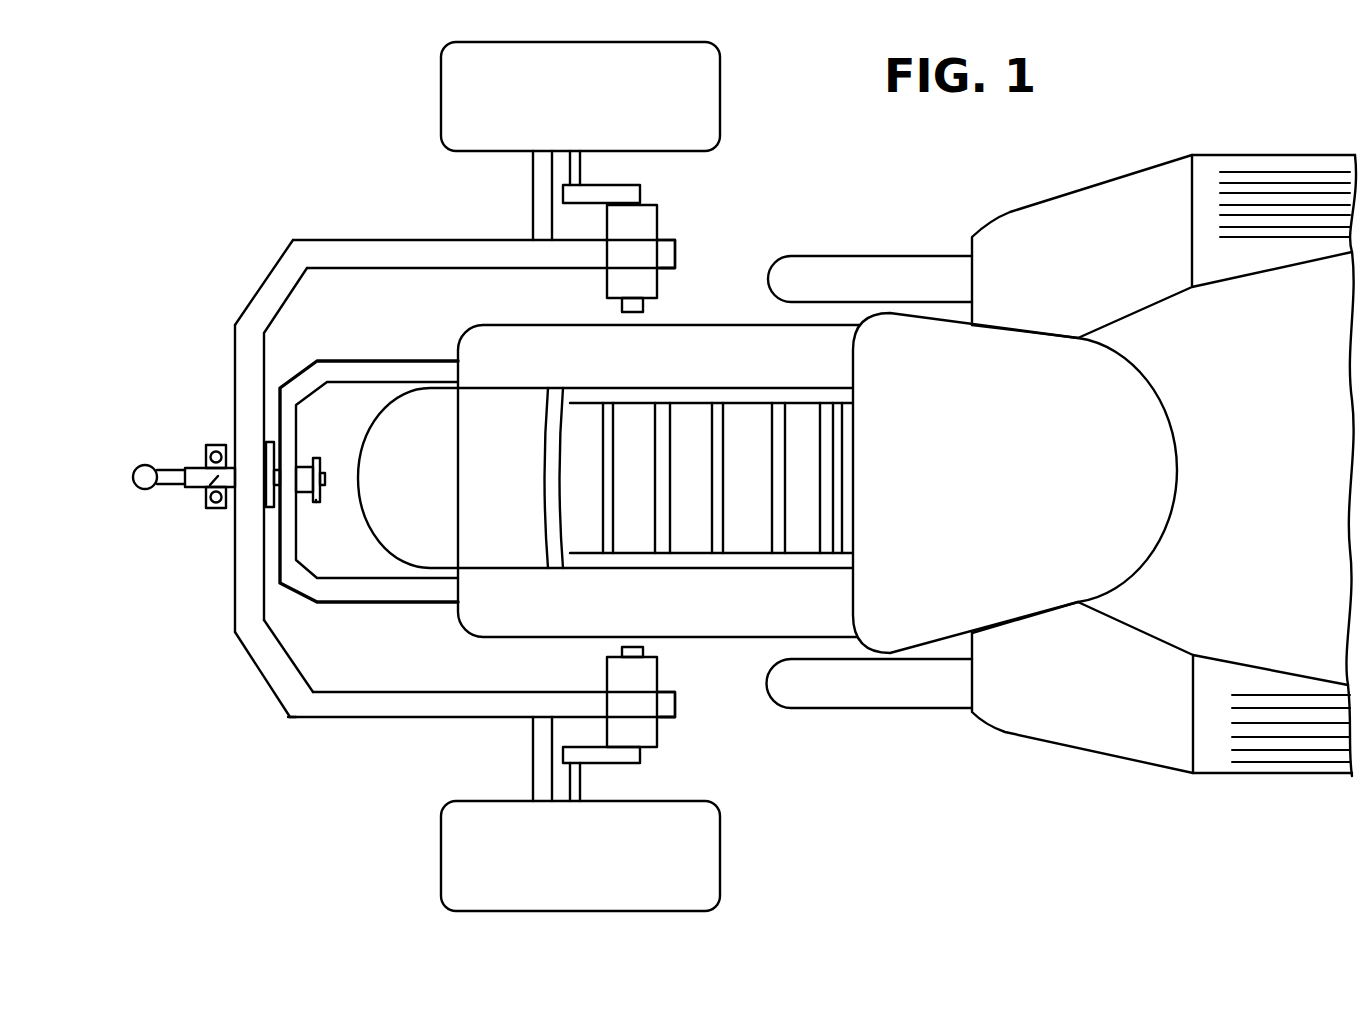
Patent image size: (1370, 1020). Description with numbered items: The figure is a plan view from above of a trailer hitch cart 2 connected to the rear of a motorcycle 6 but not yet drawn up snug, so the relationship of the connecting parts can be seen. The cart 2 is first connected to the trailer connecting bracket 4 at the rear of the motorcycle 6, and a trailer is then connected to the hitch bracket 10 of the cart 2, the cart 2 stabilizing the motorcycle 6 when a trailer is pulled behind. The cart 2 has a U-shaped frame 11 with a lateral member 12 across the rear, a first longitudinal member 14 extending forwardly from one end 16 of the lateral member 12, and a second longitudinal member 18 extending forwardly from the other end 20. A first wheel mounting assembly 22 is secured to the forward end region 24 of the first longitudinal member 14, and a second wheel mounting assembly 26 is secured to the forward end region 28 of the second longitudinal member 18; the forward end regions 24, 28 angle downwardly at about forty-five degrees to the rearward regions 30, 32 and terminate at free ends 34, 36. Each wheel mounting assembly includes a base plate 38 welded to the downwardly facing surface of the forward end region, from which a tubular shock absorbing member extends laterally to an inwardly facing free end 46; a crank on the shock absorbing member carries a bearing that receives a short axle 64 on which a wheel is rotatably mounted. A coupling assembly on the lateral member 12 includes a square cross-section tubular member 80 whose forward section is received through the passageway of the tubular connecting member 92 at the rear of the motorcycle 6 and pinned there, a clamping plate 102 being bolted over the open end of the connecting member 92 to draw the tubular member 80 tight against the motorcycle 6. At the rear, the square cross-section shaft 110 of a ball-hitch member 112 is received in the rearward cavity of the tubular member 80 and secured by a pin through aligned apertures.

The two-wheel cart 2 is at (421, 468).
The trailer connecting bracket 4 is at (330, 360).
The motorcycle 6 is at (1041, 196).
The hitch bracket 10 is at (206, 487).
The U-shaped frame 11 is at (262, 678).
The lateral member 12 is at (233, 590).
The first longitudinal member 14 is at (420, 240).
The one end of the lateral member 16 is at (288, 245).
The second longitudinal member 18 is at (350, 722).
The other end of the lateral member 20 is at (290, 717).
The first wheel mounting assembly 22 is at (660, 222).
The forward end region of the first longitudinal member 24 is at (665, 253).
The second wheel mounting assembly 26 is at (660, 738).
The forward end region of the second longitudinal member 28 is at (668, 703).
The rearward region of the first longitudinal member 30 is at (452, 268).
The rearward region of the second longitudinal member 32 is at (452, 720).
The free end of the first longitudinal member 34 is at (676, 265).
The free end of the second longitudinal member 36 is at (676, 712).
The base plate 38 is at (644, 306).
The inwardly facing free end of the shock absorbing member 46 is at (573, 657).
The short axle 64 is at (582, 190).
The angular cross-section tubular member 80 is at (206, 503).
The tubular connecting member 92 is at (312, 460).
The clamping plate 102 is at (316, 502).
The square cross-section shaft 110 is at (170, 470).
The ball-hitch member 112 is at (145, 465).